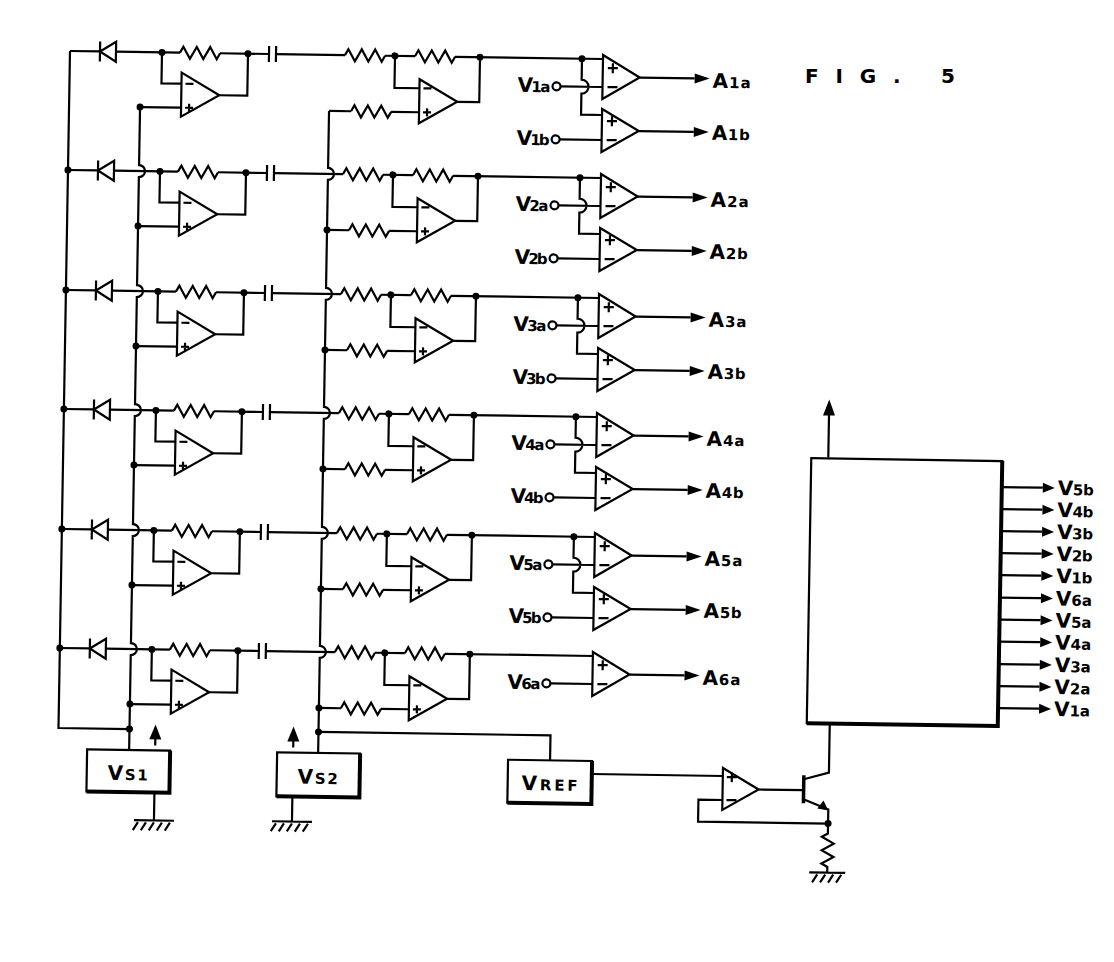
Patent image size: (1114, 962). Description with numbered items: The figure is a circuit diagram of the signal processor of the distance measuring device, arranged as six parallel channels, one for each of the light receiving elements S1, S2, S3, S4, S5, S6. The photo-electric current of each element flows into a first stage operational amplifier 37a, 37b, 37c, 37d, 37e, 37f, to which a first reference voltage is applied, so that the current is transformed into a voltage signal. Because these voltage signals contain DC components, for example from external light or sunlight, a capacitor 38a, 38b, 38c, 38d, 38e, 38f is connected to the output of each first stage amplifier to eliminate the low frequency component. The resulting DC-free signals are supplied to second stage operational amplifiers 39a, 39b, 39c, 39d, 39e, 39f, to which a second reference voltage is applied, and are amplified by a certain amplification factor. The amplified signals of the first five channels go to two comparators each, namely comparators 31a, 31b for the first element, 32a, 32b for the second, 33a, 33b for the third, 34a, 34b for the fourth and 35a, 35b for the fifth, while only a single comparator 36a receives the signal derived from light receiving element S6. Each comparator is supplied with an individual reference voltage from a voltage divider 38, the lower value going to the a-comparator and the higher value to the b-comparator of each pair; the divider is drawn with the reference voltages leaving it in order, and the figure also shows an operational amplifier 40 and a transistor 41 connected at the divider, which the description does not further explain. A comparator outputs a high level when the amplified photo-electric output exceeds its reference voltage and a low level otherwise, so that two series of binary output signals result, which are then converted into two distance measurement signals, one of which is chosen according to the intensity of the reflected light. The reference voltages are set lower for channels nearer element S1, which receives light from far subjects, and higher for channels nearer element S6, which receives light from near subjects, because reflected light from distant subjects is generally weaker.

The light receiving element S1 is at (104, 77).
The light receiving element S2 is at (102, 196).
The light receiving element S3 is at (100, 316).
The light receiving element S4 is at (98, 435).
The light receiving element S5 is at (96, 555).
The light receiving element S6 is at (94, 674).
The first stage operational amplifier 37a is at (211, 117).
The first stage operational amplifier 37b is at (209, 236).
The first stage operational amplifier 37c is at (207, 356).
The first stage operational amplifier 37d is at (205, 475).
The first stage operational amplifier 37e is at (203, 595).
The first stage operational amplifier 37f is at (202, 714).
The capacitor 38a is at (290, 82).
The capacitor 38b is at (288, 201).
The capacitor 38c is at (286, 321).
The capacitor 38d is at (284, 440).
The capacitor 38e is at (282, 560).
The capacitor 38f is at (281, 679).
The second stage operational amplifier 39a is at (451, 123).
The second stage operational amplifier 39b is at (449, 242).
The second stage operational amplifier 39c is at (447, 362).
The second stage operational amplifier 39d is at (445, 481).
The second stage operational amplifier 39e is at (443, 601).
The second stage operational amplifier 39f is at (454, 707).
The comparator 31a is at (628, 4).
The comparator 31b is at (628, 66).
The comparator 32a is at (646, 179).
The comparator 32b is at (645, 238).
The comparator 33a is at (644, 299).
The comparator 33b is at (643, 358).
The comparator 34a is at (642, 418).
The comparator 34b is at (641, 477).
The comparator 35a is at (640, 538).
The comparator 35b is at (639, 597).
The comparator 36a is at (639, 657).
The voltage divider 38 is at (907, 447).
The operational amplifier 40 is at (750, 758).
The transistor 41 is at (843, 778).